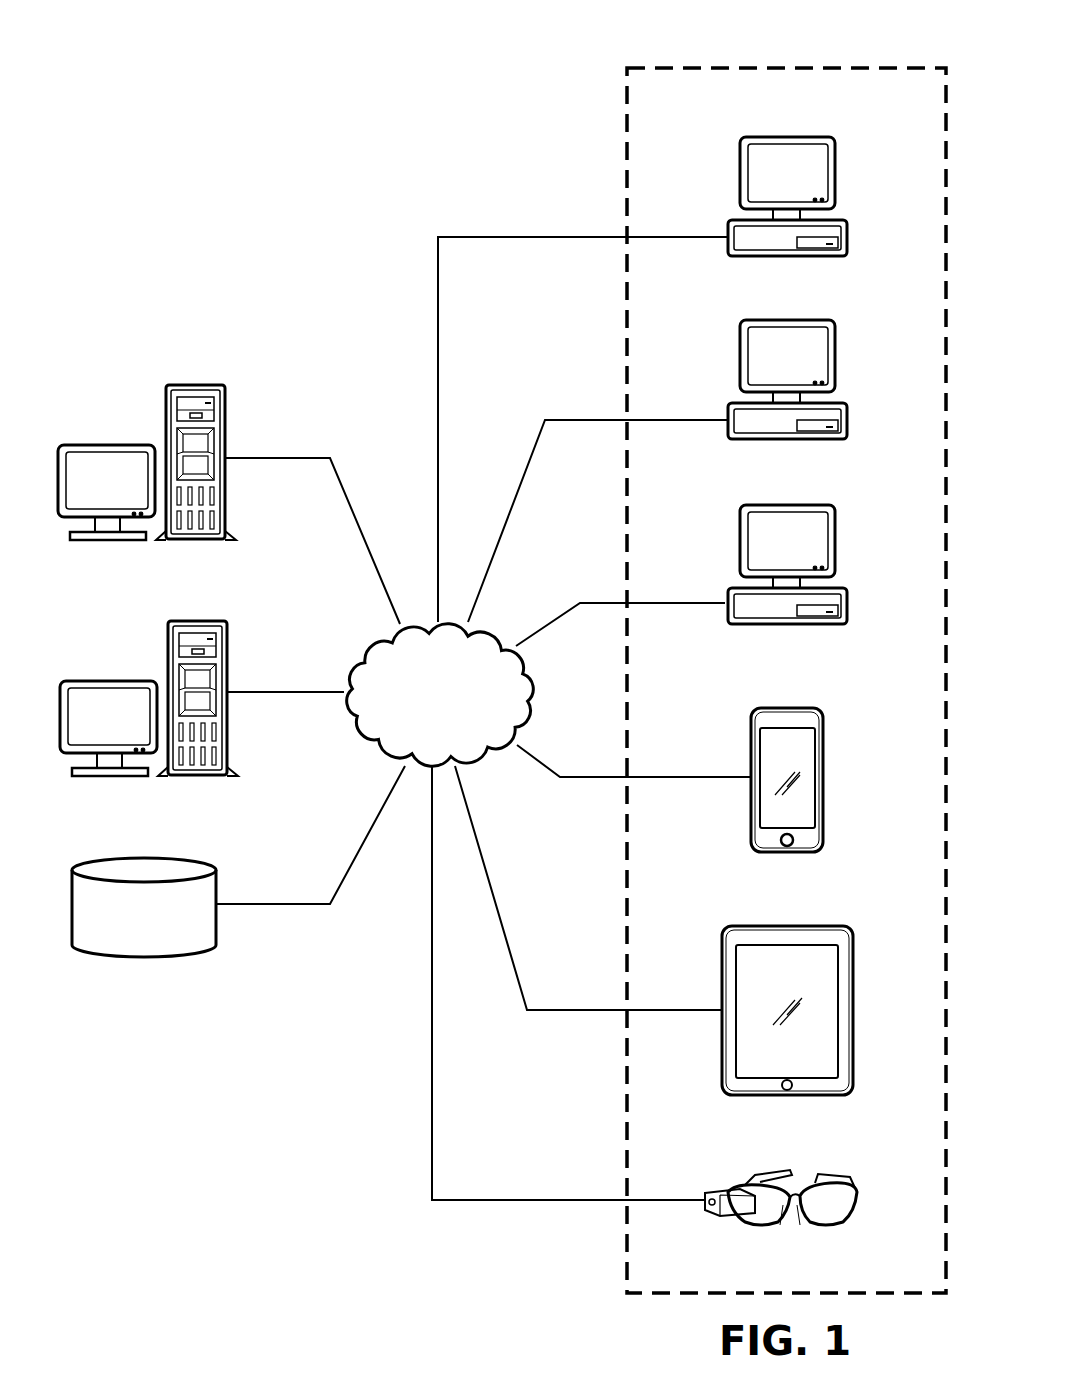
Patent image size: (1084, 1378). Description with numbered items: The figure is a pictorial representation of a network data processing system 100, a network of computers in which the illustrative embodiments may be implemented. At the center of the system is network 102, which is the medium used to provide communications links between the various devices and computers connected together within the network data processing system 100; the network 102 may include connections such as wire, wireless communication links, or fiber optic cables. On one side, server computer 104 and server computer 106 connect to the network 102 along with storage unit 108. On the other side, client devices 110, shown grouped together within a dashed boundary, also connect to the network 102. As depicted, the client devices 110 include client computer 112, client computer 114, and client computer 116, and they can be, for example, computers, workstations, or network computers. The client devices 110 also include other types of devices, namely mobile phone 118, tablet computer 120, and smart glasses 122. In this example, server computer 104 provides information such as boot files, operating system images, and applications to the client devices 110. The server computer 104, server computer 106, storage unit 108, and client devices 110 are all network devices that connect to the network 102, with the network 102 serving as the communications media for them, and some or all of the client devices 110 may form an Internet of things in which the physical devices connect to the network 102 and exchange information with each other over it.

The network data processing system 100 is at (300, 92).
The network 102 is at (418, 726).
The server computer 104 is at (88, 445).
The server computer 106 is at (108, 681).
The storage unit 108 is at (141, 956).
The client devices 110 is at (806, 58).
The client computer 112 is at (836, 172).
The client computer 114 is at (836, 355).
The client computer 116 is at (836, 540).
The mobile phone 118 is at (824, 793).
The tablet computer 120 is at (854, 1022).
The smart glasses 122 is at (857, 1203).